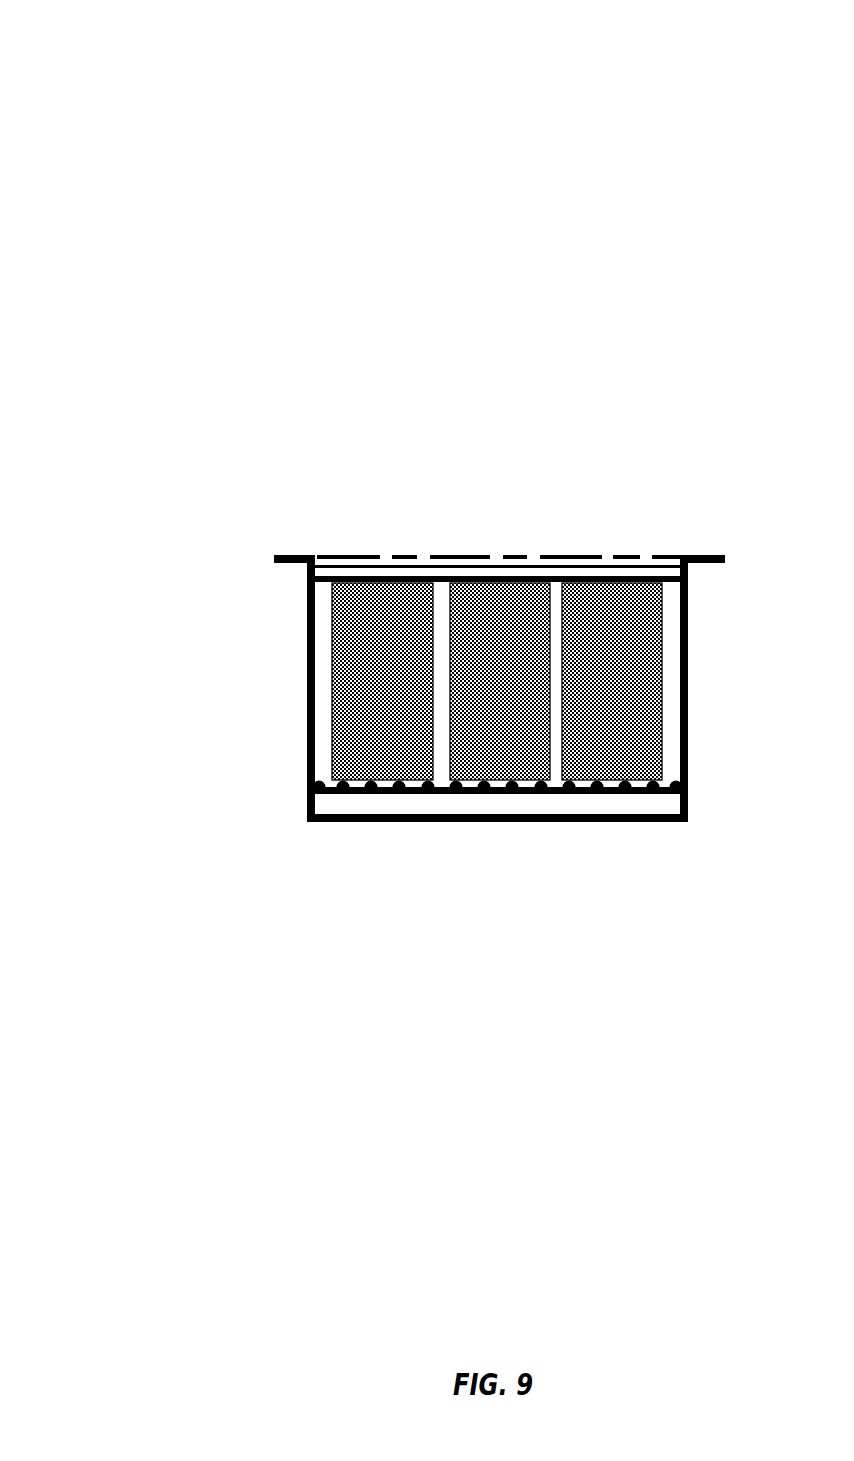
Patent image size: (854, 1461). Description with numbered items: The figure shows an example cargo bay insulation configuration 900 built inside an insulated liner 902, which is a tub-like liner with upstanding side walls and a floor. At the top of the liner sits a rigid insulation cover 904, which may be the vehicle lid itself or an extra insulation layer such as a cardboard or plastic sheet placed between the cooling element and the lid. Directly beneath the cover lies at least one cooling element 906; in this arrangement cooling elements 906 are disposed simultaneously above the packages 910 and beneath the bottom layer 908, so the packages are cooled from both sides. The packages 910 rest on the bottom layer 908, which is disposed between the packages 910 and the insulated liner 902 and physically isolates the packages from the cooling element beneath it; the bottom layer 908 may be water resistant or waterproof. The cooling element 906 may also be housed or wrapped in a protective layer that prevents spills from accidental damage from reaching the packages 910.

The cargo bay insulation configuration 900 is at (130, 88).
The insulated liner 902 is at (308, 628).
The rigid insulation cover 904 is at (618, 557).
The cooling element 906 is at (668, 570).
The bottom layer 908 is at (688, 791).
The packages 910 is at (332, 727).